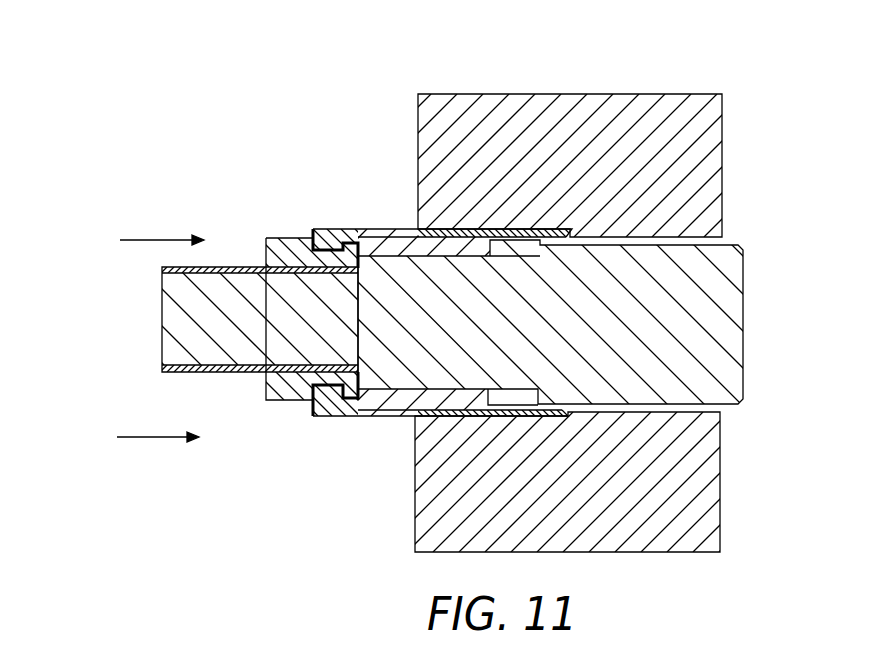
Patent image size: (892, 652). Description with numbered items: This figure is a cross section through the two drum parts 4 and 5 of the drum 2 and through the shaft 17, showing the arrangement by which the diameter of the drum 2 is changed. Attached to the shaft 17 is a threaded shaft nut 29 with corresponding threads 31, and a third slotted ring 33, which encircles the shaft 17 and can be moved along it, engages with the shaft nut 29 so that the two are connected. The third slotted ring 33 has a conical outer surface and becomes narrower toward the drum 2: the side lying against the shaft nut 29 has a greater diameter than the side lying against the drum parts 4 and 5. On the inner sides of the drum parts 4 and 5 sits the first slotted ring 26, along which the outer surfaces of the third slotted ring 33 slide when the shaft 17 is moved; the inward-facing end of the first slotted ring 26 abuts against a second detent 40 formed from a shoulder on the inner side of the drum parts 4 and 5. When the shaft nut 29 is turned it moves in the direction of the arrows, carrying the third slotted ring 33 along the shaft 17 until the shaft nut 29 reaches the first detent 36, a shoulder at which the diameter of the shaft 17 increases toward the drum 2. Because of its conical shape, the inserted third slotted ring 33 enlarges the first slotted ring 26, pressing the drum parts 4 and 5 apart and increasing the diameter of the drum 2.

The drum 2 is at (213, 107).
The first drum part 4 is at (713, 512).
The second drum part 5 is at (682, 170).
The shaft 17 is at (197, 325).
The first slotted, conical ring 26 is at (445, 228).
The shaft nut 29 is at (285, 262).
The threads 31 is at (313, 236).
The third slotted ring 33 is at (360, 237).
The first detent 36 is at (398, 235).
The second detent 40 is at (572, 237).